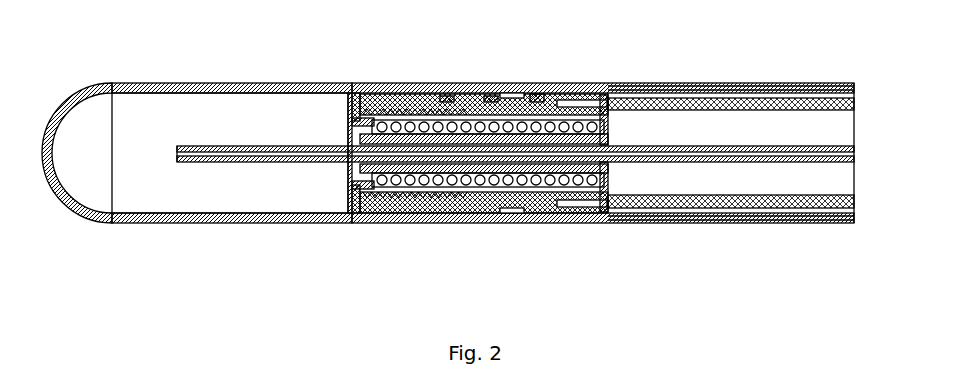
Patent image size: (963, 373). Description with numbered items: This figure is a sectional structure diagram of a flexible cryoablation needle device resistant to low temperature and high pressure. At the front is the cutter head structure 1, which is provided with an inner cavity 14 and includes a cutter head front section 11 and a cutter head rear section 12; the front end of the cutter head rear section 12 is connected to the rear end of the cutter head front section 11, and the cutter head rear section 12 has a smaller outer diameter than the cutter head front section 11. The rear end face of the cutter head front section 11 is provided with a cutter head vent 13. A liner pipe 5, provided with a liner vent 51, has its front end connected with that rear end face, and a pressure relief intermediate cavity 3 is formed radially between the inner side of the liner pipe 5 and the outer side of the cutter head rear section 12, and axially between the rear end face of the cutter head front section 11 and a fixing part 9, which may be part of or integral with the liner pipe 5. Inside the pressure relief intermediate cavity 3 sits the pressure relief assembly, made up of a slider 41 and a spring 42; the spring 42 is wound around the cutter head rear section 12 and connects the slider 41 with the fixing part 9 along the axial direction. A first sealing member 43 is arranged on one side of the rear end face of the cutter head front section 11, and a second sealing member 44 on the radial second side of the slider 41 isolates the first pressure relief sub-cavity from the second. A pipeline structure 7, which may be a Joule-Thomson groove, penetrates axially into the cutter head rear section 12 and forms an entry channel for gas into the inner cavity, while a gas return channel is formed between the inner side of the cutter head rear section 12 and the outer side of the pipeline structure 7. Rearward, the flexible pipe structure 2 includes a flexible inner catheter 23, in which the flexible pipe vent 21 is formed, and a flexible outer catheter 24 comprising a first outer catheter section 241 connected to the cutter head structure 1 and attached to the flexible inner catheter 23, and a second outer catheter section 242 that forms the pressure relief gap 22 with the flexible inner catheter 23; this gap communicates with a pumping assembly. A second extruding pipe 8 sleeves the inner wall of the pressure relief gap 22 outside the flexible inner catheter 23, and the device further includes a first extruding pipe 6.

The cutter head structure 1 is at (248, 226).
The cutter head front section 11 is at (228, 83).
The cutter head rear section 12 is at (597, 227).
The cutter head vent 13 is at (345, 222).
The inner cavity 14 is at (178, 198).
The flexible pipe structure 2 is at (857, 97).
The flexible pipe vent 21 is at (528, 93).
The pressure relief gap 22 is at (677, 213).
The flexible inner catheter 23 is at (556, 205).
The flexible outer catheter 24 is at (730, 83).
The first outer catheter section 241 is at (447, 95).
The second outer catheter section 242 is at (505, 95).
The pressure relief intermediate cavity 3 is at (535, 205).
The slider 41 is at (357, 92).
The spring 42 is at (580, 97).
The first sealing member 43 is at (372, 222).
The second sealing member 44 is at (405, 222).
The liner pipe 5 is at (418, 92).
The liner vent 51 is at (538, 95).
The first extruding pipe 6 is at (432, 212).
The pipeline structure 7 is at (765, 150).
The second extruding pipe 8 is at (618, 84).
The fixing part 9 is at (620, 227).